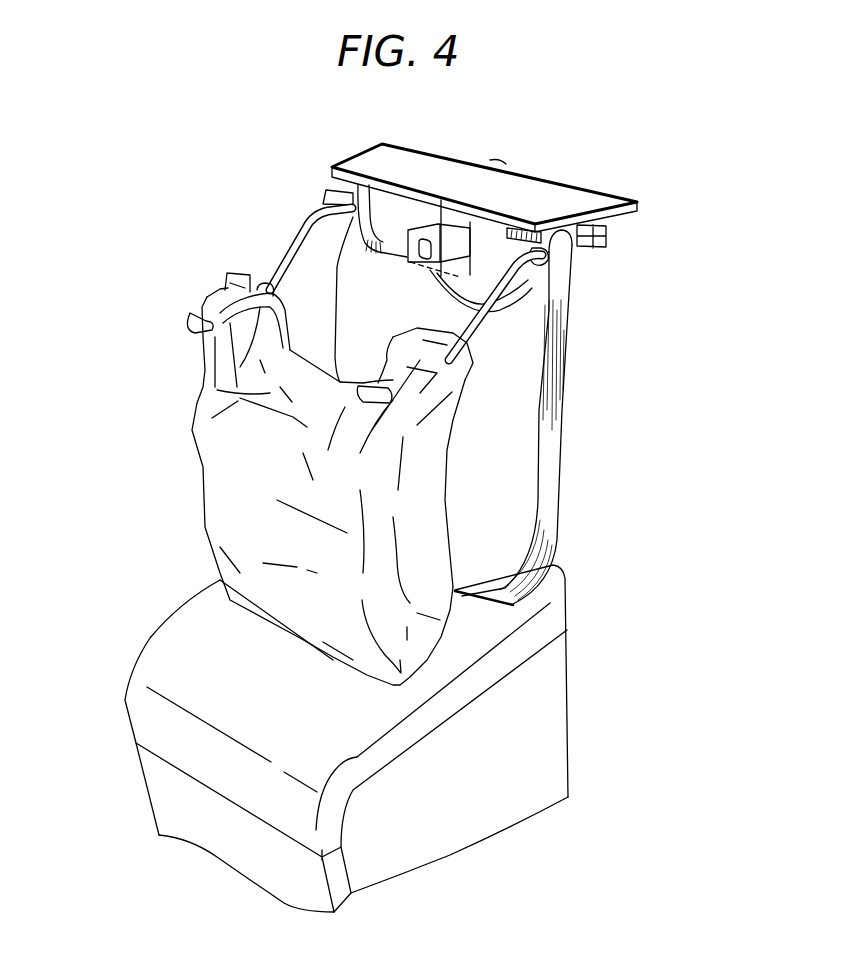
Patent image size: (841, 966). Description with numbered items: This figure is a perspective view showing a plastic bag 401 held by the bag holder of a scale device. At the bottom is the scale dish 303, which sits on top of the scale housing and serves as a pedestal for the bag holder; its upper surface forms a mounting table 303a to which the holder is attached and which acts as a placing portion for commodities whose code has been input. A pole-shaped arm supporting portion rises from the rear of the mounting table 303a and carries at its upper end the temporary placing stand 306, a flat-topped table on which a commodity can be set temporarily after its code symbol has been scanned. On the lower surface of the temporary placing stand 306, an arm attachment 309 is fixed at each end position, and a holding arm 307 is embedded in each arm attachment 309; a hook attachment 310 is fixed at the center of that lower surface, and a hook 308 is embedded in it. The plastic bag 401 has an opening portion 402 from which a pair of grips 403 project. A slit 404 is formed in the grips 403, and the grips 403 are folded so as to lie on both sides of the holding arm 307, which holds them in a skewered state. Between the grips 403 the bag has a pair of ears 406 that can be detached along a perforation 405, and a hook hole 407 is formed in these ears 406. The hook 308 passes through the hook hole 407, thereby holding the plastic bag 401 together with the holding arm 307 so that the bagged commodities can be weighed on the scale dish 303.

The scale dish 303 is at (217, 607).
The mounting table 303a is at (207, 640).
The temporary placing stand 306 is at (537, 183).
The holding arm 307 is at (488, 330).
The hook 308 is at (430, 222).
The arm attachment 309 is at (590, 236).
The hook attachment 310 is at (497, 163).
The plastic bag 401 is at (227, 521).
The opening portion 402 is at (197, 440).
The grip 403 is at (368, 190).
The slit 404 is at (322, 203).
The perforation 405 is at (500, 306).
The ear 406 is at (474, 224).
The hook hole 407 is at (543, 255).